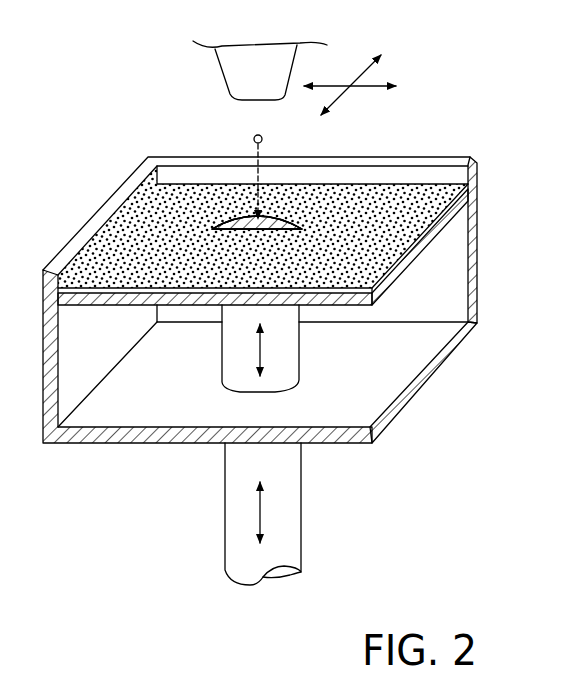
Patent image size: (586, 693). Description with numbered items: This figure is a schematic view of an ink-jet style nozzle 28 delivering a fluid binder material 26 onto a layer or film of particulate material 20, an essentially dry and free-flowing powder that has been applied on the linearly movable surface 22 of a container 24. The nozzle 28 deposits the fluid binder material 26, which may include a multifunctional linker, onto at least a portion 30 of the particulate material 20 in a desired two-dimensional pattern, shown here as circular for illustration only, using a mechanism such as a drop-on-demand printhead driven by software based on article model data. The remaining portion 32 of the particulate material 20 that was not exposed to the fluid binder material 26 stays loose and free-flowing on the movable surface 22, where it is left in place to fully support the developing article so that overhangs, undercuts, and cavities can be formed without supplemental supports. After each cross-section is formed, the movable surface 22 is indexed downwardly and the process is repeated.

The particulate material 20 is at (345, 192).
The linearly movable surface 22 is at (430, 241).
The container 24 is at (478, 192).
The fluid binder material 26 is at (254, 137).
The ink-jet style nozzle 28 is at (298, 63).
The portion of the layer of particulate material 30 is at (298, 228).
The unbonded portion of the particulate material 32 is at (213, 216).